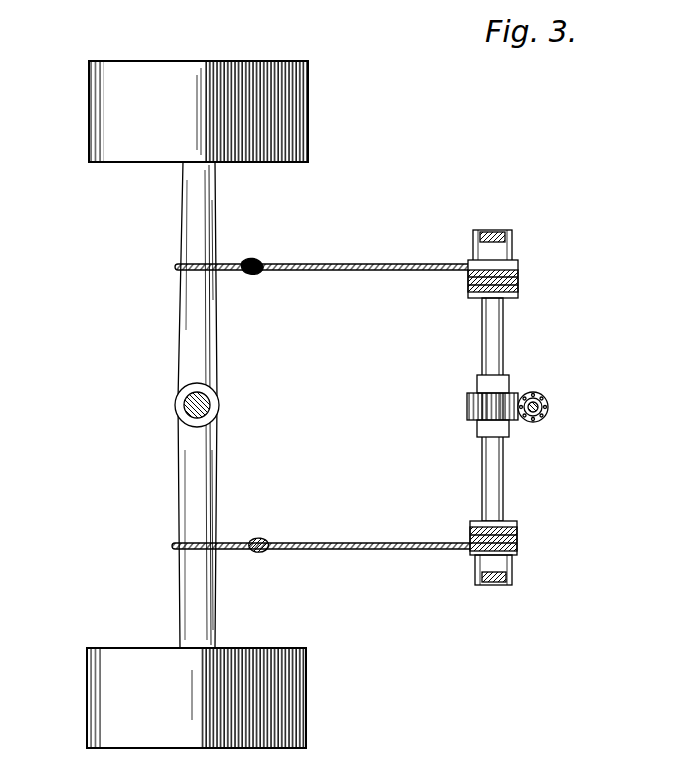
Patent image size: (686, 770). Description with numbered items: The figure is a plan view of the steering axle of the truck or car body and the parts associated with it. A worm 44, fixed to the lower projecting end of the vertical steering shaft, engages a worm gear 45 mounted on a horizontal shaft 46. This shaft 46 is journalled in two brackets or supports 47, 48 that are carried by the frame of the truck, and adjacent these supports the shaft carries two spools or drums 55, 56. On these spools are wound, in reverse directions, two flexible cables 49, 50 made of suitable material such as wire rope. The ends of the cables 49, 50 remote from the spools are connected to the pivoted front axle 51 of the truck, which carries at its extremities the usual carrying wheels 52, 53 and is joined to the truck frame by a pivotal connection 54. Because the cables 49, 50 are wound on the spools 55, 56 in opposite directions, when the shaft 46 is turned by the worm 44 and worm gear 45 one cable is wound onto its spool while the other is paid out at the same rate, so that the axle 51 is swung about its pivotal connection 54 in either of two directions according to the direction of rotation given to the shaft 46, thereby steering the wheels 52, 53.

The worm 44 is at (546, 400).
The worm gear 45 is at (468, 402).
The shaft 46 is at (503, 340).
The support 47 is at (497, 585).
The support 48 is at (500, 231).
The cable 49 is at (346, 551).
The cable 50 is at (338, 265).
The front axle 51 is at (172, 340).
The carrying wheel 52 is at (97, 678).
The carrying wheel 53 is at (128, 74).
The pivotal connection 54 is at (183, 403).
The spool 55 is at (516, 526).
The spool 56 is at (514, 293).